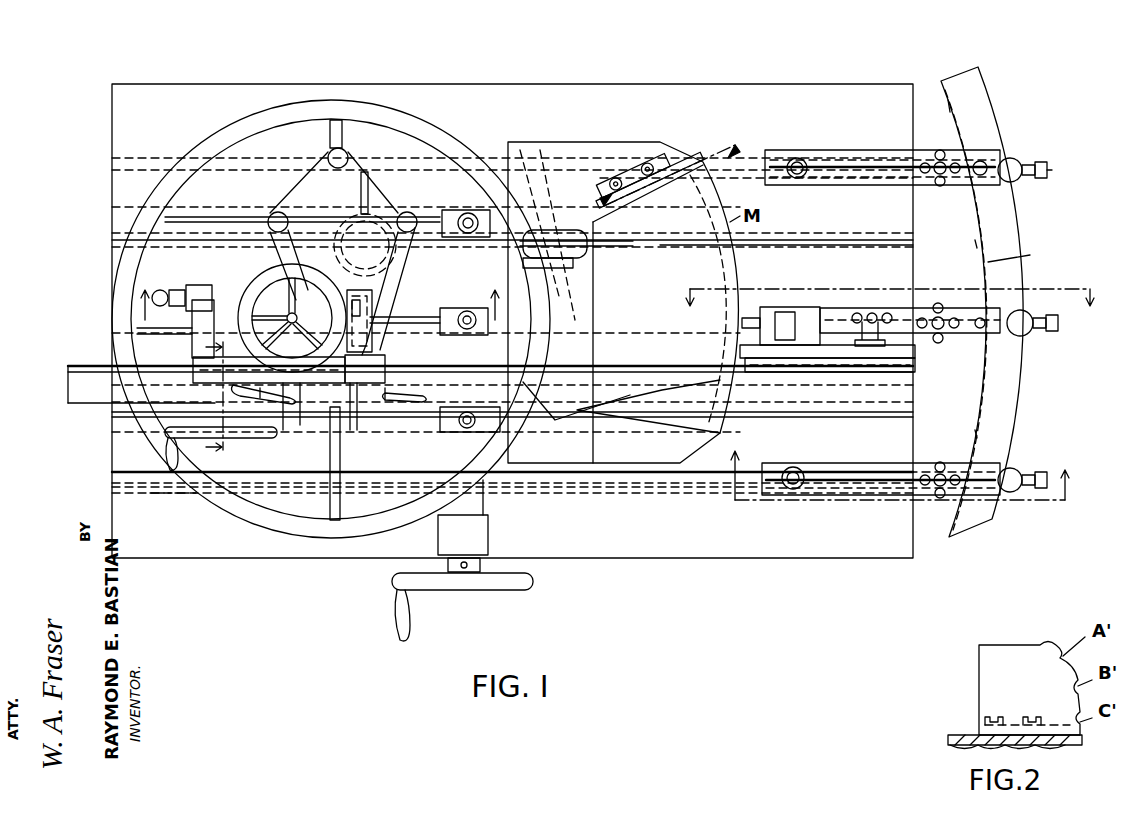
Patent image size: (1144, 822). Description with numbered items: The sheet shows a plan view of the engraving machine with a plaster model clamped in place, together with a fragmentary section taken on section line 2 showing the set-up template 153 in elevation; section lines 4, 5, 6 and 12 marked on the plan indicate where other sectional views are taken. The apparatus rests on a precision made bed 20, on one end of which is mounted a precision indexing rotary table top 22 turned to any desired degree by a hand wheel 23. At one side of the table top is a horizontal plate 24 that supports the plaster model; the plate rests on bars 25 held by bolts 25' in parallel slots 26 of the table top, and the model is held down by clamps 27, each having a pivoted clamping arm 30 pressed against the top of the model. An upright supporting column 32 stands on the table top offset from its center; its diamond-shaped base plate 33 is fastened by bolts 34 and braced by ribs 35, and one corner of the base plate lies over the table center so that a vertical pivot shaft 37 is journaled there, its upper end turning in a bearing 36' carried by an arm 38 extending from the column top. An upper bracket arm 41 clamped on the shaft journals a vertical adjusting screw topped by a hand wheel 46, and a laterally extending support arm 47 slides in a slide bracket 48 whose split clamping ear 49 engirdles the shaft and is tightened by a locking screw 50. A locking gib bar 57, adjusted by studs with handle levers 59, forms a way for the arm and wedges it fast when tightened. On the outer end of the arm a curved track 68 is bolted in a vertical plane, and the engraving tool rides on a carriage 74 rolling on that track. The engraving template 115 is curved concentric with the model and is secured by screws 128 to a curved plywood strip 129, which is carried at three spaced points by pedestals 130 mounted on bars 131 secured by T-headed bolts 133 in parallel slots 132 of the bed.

In FIG. 1, the bed 20 is at (728, 548).
In FIG. 1, the rotary table top 22 is at (247, 150).
In FIG. 1, the hand wheel 23 is at (462, 590).
In FIG. 1, the horizontal plate 24 is at (573, 148).
In FIG. 2, the horizontal plate 24 is at (958, 732).
In FIG. 1, the bars 25 is at (462, 257).
In FIG. 1, the bolts 25' is at (465, 392).
In FIG. 1, the parallel slots 26 is at (200, 216).
In FIG. 1, the clamps 27 is at (556, 258).
In FIG. 1, the clamping arm 30 is at (615, 248).
In FIG. 1, the upright supporting column 32 is at (348, 215).
In FIG. 1, the diamond-shaped base plate 33 is at (405, 212).
In FIG. 1, the bolts 34 is at (328, 156).
In FIG. 1, the ribs 35 is at (372, 208).
In FIG. 1, the anti-friction bearing 36' is at (389, 299).
In FIG. 1, the vertical pivot shaft 37 is at (357, 419).
In FIG. 1, the arm 38 is at (372, 300).
In FIG. 1, the upper bracket arm 41 is at (302, 310).
In FIG. 1, the hand wheel 46 is at (290, 420).
In FIG. 1, the support arm 47 is at (58, 396).
In FIG. 1, the slide bracket 48 is at (195, 366).
In FIG. 1, the split clamping ear 49 is at (362, 345).
In FIG. 1, the locking screw 50 is at (218, 292).
In FIG. 1, the locking gib bar 57 is at (137, 331).
In FIG. 1, the handle levers 59 is at (420, 397).
In FIG. 1, the curved track 68 is at (905, 370).
In FIG. 1, the carriage 74 is at (845, 300).
In FIG. 1, the engraving template 115 is at (1027, 251).
In FIG. 1, the screws 128 is at (948, 100).
In FIG. 1, the curved strip 129 is at (1000, 400).
In FIG. 1, the pedestals 130 is at (1025, 160).
In FIG. 1, the bars 131 is at (860, 152).
In FIG. 1, the parallel slots 132 is at (741, 172).
In FIG. 1, the T-headed bolts 133 is at (797, 158).
In FIG. 1, the set-up template 153 is at (672, 160).
In FIG. 2, the set-up template 153 is at (1033, 648).
In FIG. 1, the section line 2- 2 is at (663, 158).
In FIG. 1, the section line 4- 4 is at (322, 290).
In FIG. 1, the section line 5- 5 is at (233, 399).
In FIG. 1, the section line 6- 6 is at (883, 311).
In FIG. 1, the section line 12- 12 is at (907, 461).